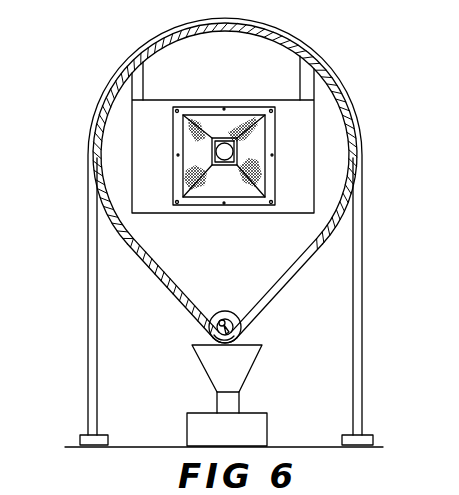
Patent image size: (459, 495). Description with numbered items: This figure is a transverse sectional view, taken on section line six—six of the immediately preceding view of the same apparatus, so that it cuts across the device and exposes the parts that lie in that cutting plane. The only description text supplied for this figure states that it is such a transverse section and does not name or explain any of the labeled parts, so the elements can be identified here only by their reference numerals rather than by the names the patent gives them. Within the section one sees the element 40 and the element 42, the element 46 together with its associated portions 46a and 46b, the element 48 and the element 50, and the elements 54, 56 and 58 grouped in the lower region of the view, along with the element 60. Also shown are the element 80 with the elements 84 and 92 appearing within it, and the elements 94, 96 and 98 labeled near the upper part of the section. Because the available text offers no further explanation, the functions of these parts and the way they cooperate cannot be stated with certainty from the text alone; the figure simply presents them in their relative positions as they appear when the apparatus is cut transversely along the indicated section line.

The frame 40 is at (115, 70).
The upper bracket 42 is at (162, 56).
The belt 46 is at (304, 50).
The belt left run 46a is at (188, 302).
The belt right run 46b is at (270, 300).
The pulley 48 is at (196, 344).
The pulley shaft 50 is at (238, 311).
The support bracket 54 is at (205, 373).
The neck 56 is at (241, 400).
The base block 58 is at (192, 427).
The legs 60 is at (88, 330).
The mounting plate 80 is at (198, 106).
The diaphragm plate 84 is at (200, 192).
The central aperture 92 is at (257, 192).
The housing 94 is at (132, 203).
The bracket side 96 is at (300, 74).
The belt inner portion 98 is at (130, 85).